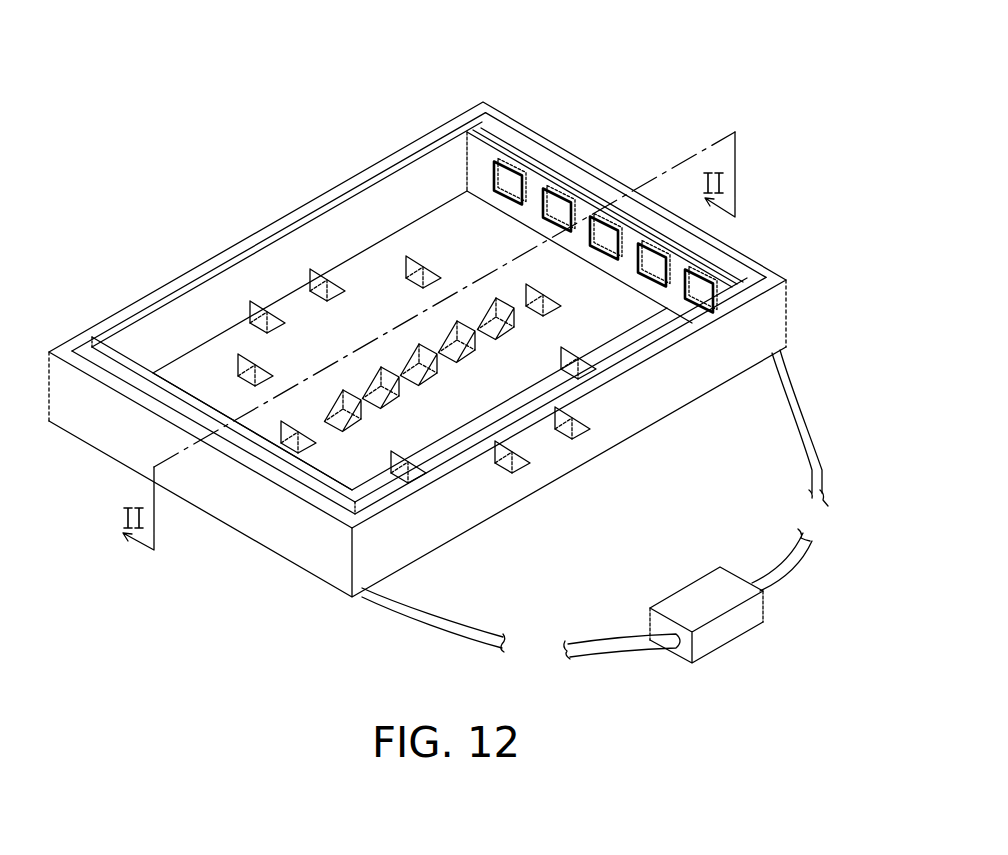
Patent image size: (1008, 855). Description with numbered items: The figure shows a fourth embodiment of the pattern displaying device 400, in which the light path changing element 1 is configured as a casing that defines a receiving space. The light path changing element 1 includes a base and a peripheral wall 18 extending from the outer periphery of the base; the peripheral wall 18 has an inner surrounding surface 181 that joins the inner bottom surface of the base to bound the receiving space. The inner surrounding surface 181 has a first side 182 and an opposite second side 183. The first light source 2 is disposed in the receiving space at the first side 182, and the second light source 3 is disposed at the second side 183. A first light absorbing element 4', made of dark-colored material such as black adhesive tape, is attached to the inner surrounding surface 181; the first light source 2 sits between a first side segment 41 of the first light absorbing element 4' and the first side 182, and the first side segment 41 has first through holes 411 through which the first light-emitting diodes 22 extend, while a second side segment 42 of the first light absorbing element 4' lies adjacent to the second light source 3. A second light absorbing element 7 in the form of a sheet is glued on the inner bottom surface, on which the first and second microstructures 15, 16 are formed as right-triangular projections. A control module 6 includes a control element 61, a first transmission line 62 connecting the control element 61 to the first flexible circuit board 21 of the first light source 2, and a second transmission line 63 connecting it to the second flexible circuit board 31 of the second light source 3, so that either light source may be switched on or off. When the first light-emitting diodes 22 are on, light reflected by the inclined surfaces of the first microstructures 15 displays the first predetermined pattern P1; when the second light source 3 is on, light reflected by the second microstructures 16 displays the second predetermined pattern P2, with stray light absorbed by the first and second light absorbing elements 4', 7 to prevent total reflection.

The pattern displaying device 400 is at (145, 45).
The light path changing element 1 is at (484, 103).
The peripheral wall 18 is at (307, 208).
The inner surrounding surface 181 is at (267, 235).
The first side 182 is at (742, 268).
The second side 183 is at (320, 497).
The first light source 2 is at (573, 161).
The first flexible circuit board 21 is at (582, 182).
The first light-emitting diodes 22 is at (508, 182).
The first side segment 41 is at (588, 213).
The first through holes 411 is at (522, 193).
The second side segment 42 is at (295, 453).
The first light absorbing element 4' is at (267, 232).
The second light source 3 is at (132, 383).
The second flexible circuit board 31 is at (160, 397).
The second light absorbing element 7 is at (207, 365).
The first microstructures 15 is at (248, 301).
The second microstructures 16 is at (438, 381).
The first predetermined pattern P1 is at (405, 257).
The second predetermined pattern P2 is at (477, 362).
The control module 6 is at (695, 644).
The control element 61 is at (741, 624).
The first transmission line 62 is at (800, 410).
The second transmission line 63 is at (433, 623).